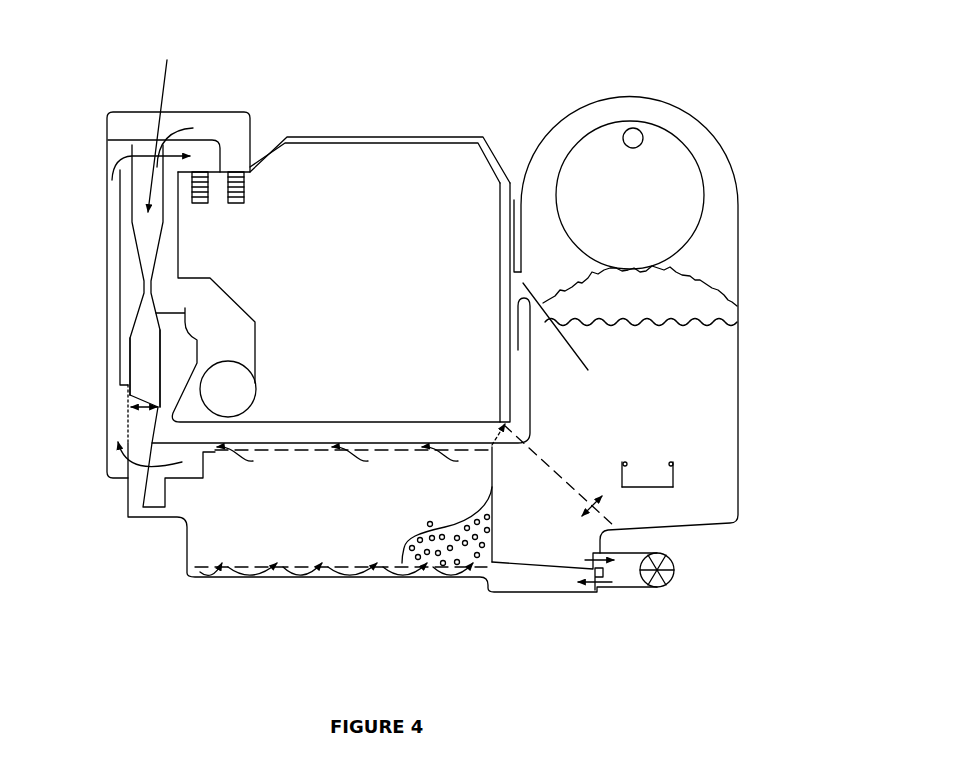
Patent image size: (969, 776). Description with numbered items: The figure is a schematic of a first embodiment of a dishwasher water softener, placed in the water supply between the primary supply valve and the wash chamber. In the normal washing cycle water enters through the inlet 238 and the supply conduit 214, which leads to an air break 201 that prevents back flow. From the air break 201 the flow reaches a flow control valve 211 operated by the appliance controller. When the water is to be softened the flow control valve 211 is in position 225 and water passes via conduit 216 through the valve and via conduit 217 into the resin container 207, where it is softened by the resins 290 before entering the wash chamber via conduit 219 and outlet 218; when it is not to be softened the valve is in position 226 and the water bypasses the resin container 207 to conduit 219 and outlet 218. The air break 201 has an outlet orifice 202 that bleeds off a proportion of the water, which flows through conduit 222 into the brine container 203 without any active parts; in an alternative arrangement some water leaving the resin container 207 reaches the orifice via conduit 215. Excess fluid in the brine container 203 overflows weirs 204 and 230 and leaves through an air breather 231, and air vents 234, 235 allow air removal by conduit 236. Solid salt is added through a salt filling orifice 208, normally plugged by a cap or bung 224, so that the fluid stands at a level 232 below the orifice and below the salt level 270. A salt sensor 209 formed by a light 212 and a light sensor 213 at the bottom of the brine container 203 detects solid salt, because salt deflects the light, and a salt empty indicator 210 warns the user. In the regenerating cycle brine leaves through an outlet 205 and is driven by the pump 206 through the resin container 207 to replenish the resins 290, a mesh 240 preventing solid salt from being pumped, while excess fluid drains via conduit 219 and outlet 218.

The air break 201 is at (140, 280).
The outlet orifice 202 is at (168, 323).
The brine container 203 is at (738, 367).
The weir 204 is at (520, 275).
The outlet 205 is at (607, 565).
The pump 206 is at (673, 577).
The resin container 207 is at (305, 533).
The salt filling orifice 208 is at (703, 223).
The salt sensor 209 is at (675, 487).
The salt empty indicator 210 is at (638, 130).
The flow control valve 211 is at (143, 427).
The light 212 is at (625, 463).
The light sensor 213 is at (672, 463).
The supply conduit 214 is at (158, 130).
The conduit 215 is at (135, 393).
The conduit 216 is at (138, 480).
The conduit 217 is at (177, 515).
The outlet 218 is at (203, 202).
The conduit 219 is at (112, 240).
The conduit 222 is at (398, 432).
The cap or bung 224 is at (647, 217).
The valve position 225 is at (130, 407).
The valve position 226 is at (156, 406).
The weir 230 is at (187, 320).
The air breather 231 is at (243, 388).
The fluid level 232 is at (737, 323).
The air vent 234 is at (497, 433).
The air vent 235 is at (555, 349).
The conduit 236 is at (290, 137).
The inlet 238 is at (108, 125).
The mesh 240 is at (613, 525).
The salt level 270 is at (740, 280).
The resins 290 is at (450, 552).